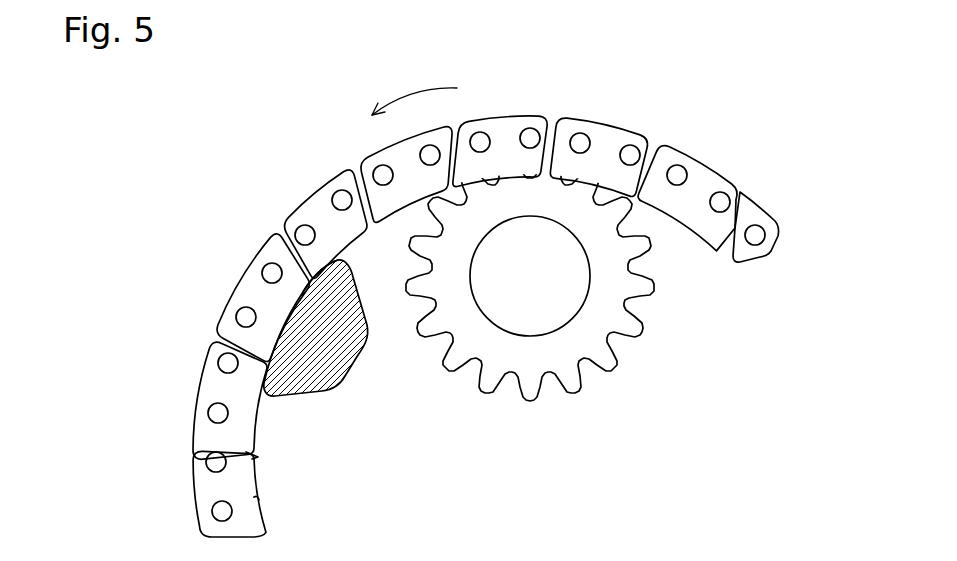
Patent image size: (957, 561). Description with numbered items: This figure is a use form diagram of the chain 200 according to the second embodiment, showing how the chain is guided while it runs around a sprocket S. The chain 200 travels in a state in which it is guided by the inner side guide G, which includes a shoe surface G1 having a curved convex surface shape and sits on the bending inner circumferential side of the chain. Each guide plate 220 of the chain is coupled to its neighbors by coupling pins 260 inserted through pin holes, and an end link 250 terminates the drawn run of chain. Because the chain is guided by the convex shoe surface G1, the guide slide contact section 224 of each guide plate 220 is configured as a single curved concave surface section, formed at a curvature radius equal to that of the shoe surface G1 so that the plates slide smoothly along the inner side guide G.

The chain 200 is at (476, 296).
The guide plate 220 is at (253, 292).
The guide slide contact section 224 is at (253, 453).
The end link 250 is at (752, 212).
The pin 260 is at (531, 130).
The inner side guide G is at (323, 343).
The shoe surface G1 is at (317, 302).
The sprocket S is at (538, 358).